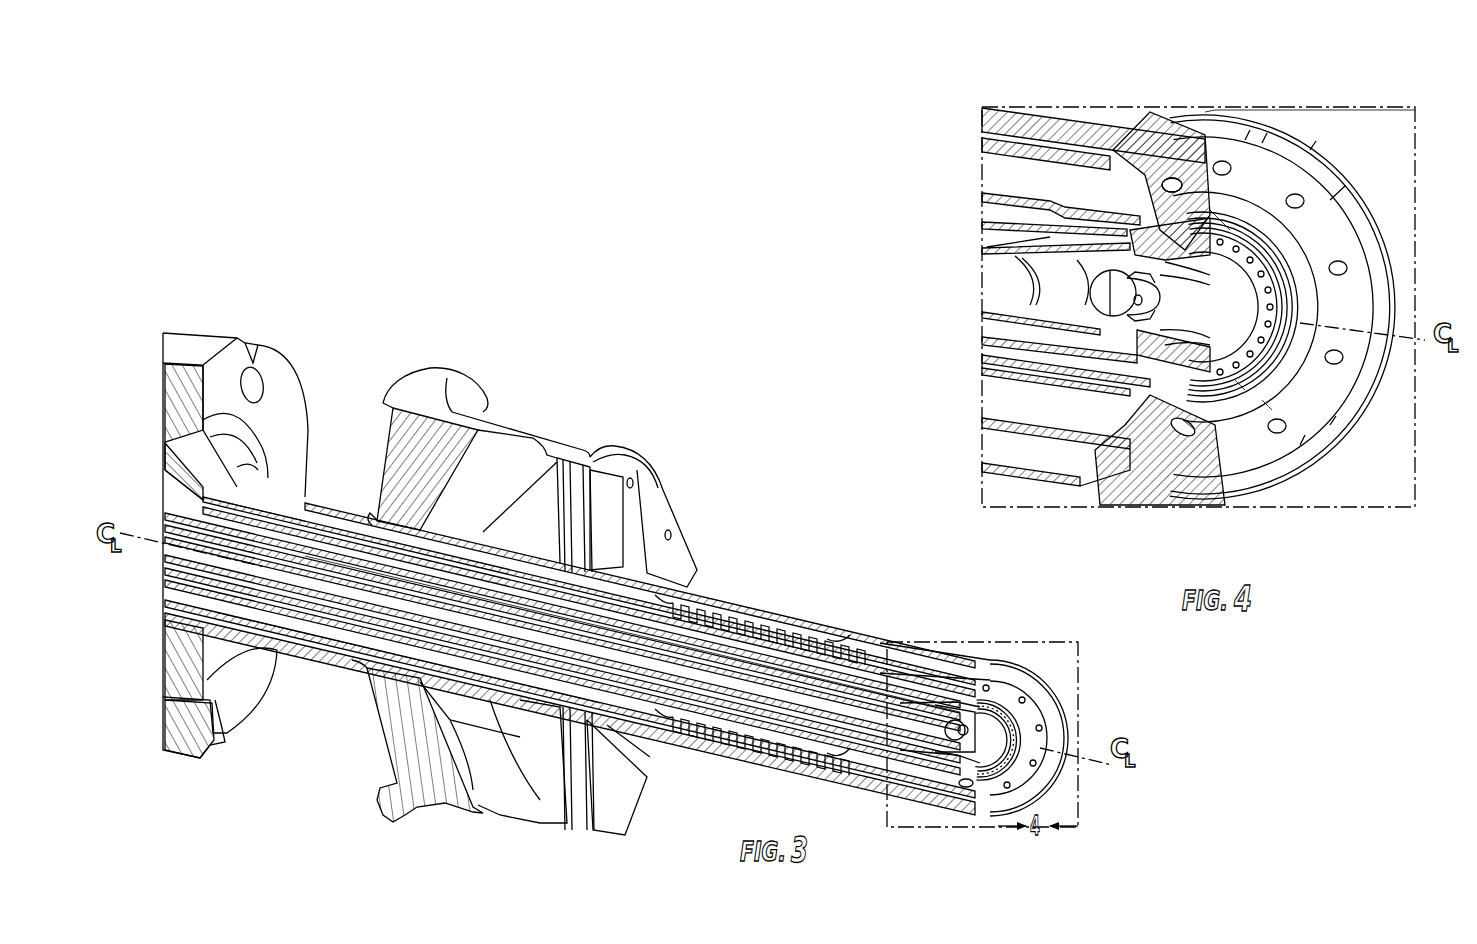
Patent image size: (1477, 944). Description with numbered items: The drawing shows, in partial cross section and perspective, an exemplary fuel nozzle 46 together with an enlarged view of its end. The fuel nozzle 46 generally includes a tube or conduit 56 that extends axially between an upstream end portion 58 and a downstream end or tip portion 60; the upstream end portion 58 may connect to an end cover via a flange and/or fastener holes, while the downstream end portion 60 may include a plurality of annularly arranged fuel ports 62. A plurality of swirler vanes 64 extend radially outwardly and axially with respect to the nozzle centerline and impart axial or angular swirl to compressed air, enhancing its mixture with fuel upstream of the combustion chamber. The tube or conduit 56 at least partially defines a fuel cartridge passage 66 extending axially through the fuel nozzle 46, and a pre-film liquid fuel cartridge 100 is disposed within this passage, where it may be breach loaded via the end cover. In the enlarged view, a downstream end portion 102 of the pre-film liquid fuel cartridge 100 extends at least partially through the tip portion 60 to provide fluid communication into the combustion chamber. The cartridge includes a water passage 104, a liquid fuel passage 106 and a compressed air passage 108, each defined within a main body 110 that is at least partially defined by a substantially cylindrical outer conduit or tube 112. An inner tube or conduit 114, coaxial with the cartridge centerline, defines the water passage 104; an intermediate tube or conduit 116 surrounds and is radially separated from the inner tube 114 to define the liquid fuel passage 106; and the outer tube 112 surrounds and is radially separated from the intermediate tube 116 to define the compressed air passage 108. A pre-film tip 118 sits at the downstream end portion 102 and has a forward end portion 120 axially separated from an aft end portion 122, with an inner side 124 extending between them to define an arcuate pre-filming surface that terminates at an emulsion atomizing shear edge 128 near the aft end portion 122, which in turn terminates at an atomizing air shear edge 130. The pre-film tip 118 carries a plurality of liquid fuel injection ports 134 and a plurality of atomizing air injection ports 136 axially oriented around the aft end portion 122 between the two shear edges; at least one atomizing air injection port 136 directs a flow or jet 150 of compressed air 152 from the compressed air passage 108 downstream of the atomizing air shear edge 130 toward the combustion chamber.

In FIG. 3, the fuel nozzle 46 is at (745, 398).
In FIG. 4, the fuel nozzle 46 is at (1330, 128).
In FIG. 3, the tube or conduit 56 is at (705, 588).
In FIG. 3, the upstream end portion 58 is at (270, 333).
In FIG. 3, the downstream end or tip portion 60 is at (1080, 660).
In FIG. 4, the downstream end or tip portion 60 is at (1290, 145).
In FIG. 3, the fuel ports 62 is at (1041, 728).
In FIG. 3, the swirler vanes 64 is at (668, 492).
In FIG. 3, the fuel cartridge passage 66 is at (365, 640).
In FIG. 3, the pre-film liquid fuel cartridge 100 is at (745, 678).
In FIG. 4, the pre-film liquid fuel cartridge 100 is at (1075, 185).
In FIG. 4, the downstream end portion 102 is at (1136, 412).
In FIG. 4, the water passage 104 is at (1000, 290).
In FIG. 4, the liquid fuel passage 106 is at (1000, 326).
In FIG. 4, the compressed air passage 108 is at (1000, 355).
In FIG. 4, the main body 110 is at (1068, 395).
In FIG. 4, the outer conduit or tube 112 is at (1040, 198).
In FIG. 4, the inner tube or conduit 114 is at (995, 248).
In FIG. 4, the intermediate tube or conduit 116 is at (1000, 230).
In FIG. 4, the pre-film tip 118 is at (1162, 248).
In FIG. 4, the forward end portion 120 is at (1093, 308).
In FIG. 4, the aft end portion 122 is at (1262, 400).
In FIG. 4, the inner side 124 is at (1268, 378).
In FIG. 4, the emulsion atomizing shear edge 128 is at (1217, 367).
In FIG. 4, the atomizing air shear edge 130 is at (1232, 384).
In FIG. 4, the liquid fuel injection ports 134 is at (1290, 173).
In FIG. 4, the atomizing air injection ports 136 is at (1297, 300).
In FIG. 4, the flow or jet 150 is at (1267, 352).
In FIG. 4, the compressed air 152 is at (1048, 362).